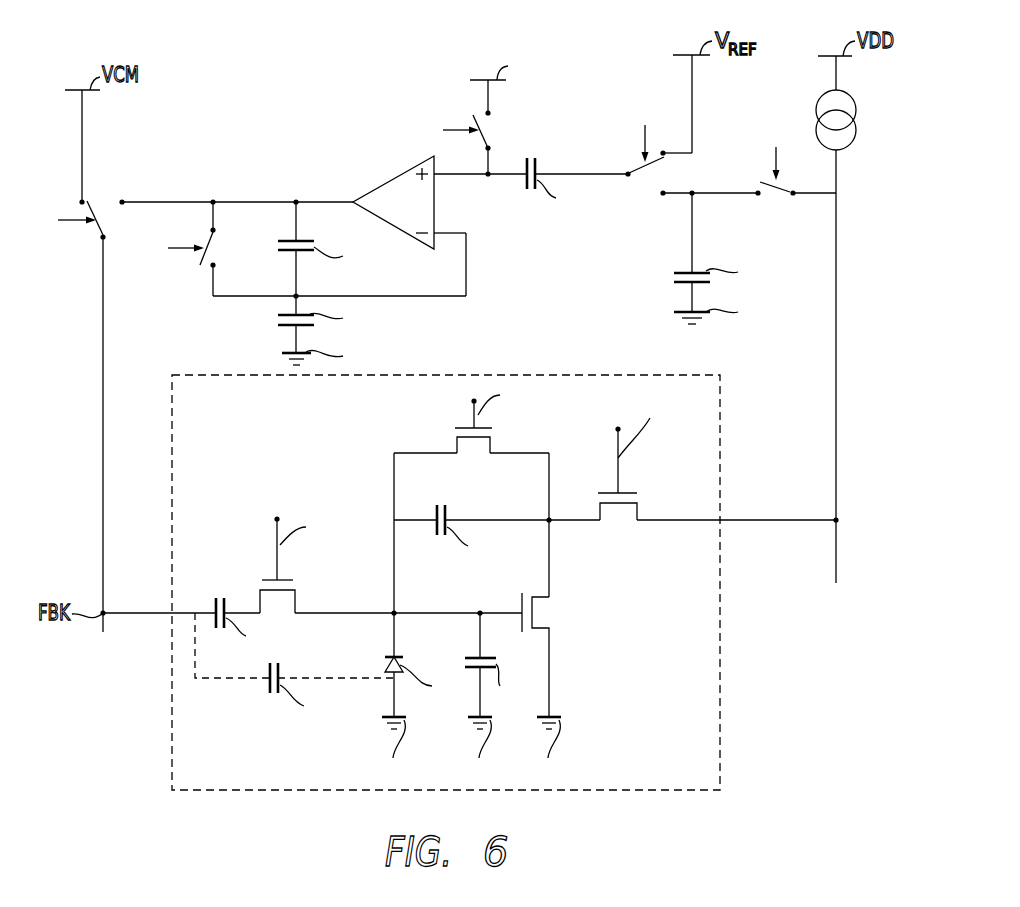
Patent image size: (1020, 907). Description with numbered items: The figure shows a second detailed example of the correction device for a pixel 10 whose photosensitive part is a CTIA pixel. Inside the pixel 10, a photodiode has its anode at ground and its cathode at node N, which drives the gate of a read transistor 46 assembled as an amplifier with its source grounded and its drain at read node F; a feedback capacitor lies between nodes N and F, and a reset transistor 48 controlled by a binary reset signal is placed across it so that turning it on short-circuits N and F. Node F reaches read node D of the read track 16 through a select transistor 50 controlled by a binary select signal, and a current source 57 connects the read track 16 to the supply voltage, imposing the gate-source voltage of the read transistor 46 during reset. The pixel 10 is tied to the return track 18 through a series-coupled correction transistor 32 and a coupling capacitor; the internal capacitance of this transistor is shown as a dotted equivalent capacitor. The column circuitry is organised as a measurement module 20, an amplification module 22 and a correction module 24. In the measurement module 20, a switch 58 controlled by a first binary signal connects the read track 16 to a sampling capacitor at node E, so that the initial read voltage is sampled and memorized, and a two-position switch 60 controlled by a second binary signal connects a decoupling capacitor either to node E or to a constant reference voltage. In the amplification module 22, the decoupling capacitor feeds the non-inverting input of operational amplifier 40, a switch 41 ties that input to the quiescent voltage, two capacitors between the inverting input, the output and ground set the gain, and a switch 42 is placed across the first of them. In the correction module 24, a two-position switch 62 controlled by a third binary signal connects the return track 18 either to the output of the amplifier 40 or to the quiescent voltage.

The pixel 10 is at (722, 402).
The read track 16 is at (836, 395).
The return track 18 is at (103, 400).
The measurement module 20 is at (715, 224).
The amplification module 22 is at (449, 134).
The correction module 24 is at (292, 241).
The correction transistor 32 is at (298, 598).
The operational amplifier 40 is at (390, 176).
The switch 41 is at (491, 131).
The switch 42 is at (215, 247).
The read transistor 46 is at (540, 593).
The reset transistor 48 is at (460, 455).
The select transistor 50 is at (602, 522).
The current source 57 is at (818, 112).
The switch 58 is at (782, 198).
The switch 60 is at (640, 178).
The switch 62 is at (106, 228).